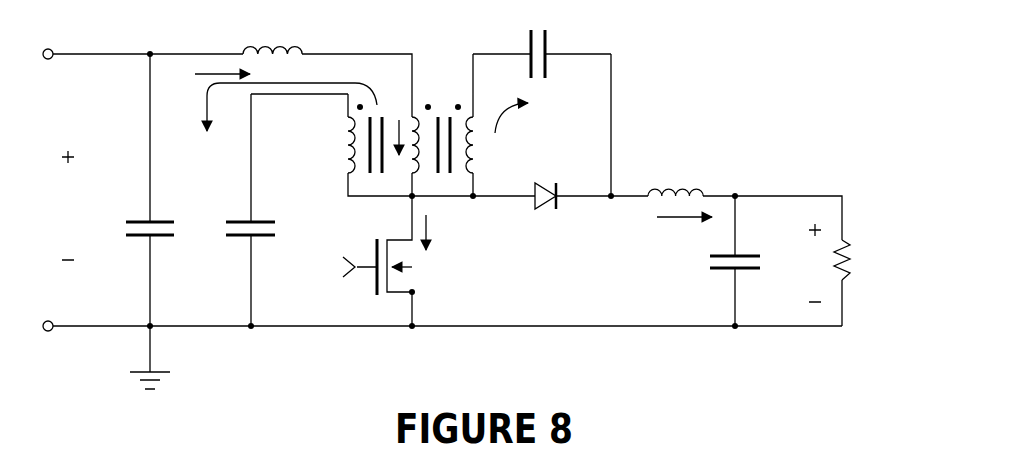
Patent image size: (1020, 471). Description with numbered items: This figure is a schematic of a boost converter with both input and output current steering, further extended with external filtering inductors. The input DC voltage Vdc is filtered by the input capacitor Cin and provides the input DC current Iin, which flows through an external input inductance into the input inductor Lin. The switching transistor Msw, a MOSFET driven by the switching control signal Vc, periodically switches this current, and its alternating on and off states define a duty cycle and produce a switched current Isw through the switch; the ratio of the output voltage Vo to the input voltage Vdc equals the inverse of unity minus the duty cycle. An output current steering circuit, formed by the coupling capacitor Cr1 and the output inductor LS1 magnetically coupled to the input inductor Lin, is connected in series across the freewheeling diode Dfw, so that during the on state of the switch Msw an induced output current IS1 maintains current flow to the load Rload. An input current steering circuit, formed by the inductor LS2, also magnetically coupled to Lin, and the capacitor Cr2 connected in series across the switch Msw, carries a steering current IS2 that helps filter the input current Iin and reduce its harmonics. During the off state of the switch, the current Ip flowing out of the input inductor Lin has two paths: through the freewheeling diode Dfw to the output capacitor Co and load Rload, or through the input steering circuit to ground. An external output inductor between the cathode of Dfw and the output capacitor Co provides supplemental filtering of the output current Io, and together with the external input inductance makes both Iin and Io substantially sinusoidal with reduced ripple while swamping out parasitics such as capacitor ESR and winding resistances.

The input DC voltage Vdc is at (64, 205).
The input DC current Iin is at (207, 76).
The input current steering circuit current IS2 is at (281, 126).
The input filter capacitor Cin is at (160, 190).
The input current steering capacitor Cr2 is at (241, 210).
The input current steering inductor LS2 is at (340, 138).
The input current flowing out from the input inductor Ip is at (398, 153).
The input inductor Lin is at (436, 127).
The output inductor LS1 is at (492, 148).
The induced output current IS1 is at (529, 123).
The coupling capacitor Cr1 is at (542, 50).
The freewheeling diode Dfw is at (554, 214).
The switched current Isw is at (446, 229).
The switching transistor Msw is at (416, 261).
The switching control signal Vc is at (331, 268).
The output current Io is at (667, 219).
The output capacitor Co is at (743, 261).
The output voltage Vo is at (813, 263).
The load Rload is at (877, 261).